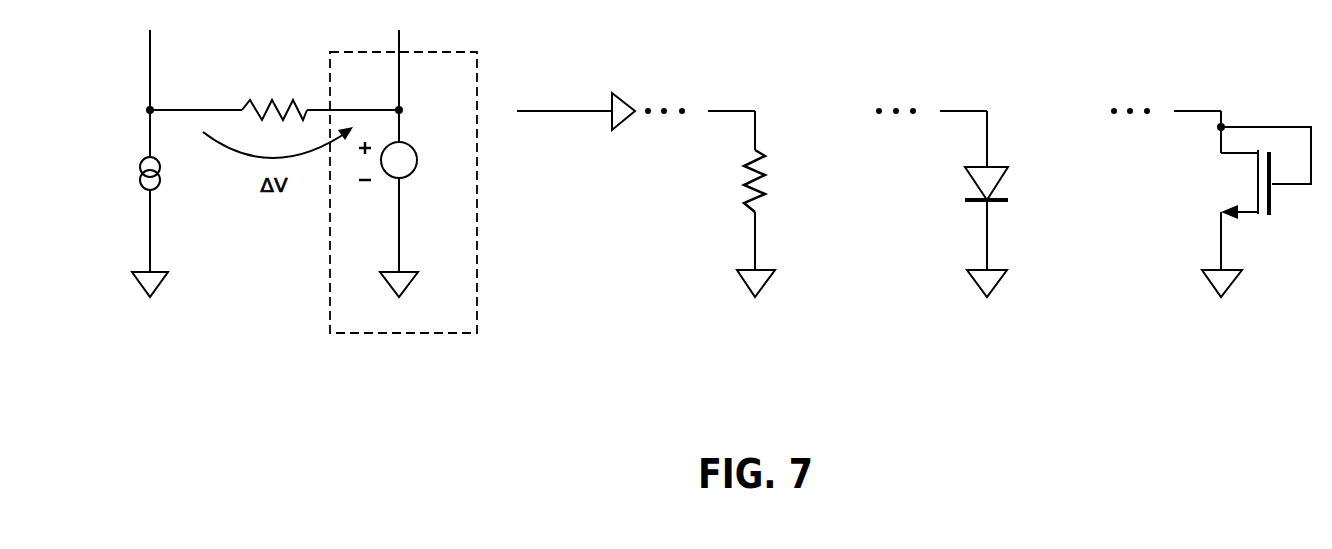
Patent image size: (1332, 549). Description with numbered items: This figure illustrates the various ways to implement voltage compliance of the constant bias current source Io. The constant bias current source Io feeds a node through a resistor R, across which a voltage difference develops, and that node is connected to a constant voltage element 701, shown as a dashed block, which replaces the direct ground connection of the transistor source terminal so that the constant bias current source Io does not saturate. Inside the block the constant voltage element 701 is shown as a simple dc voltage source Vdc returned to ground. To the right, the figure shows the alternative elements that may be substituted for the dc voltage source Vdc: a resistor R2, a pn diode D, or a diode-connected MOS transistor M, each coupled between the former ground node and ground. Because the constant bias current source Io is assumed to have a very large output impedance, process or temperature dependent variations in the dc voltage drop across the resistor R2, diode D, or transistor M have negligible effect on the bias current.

The constant voltage element 701 is at (451, 181).
The resistor R is at (274, 97).
The constant bias current source Io is at (135, 226).
The dc voltage source Vdc is at (406, 174).
The resistor R2 is at (772, 181).
The pn diode D is at (999, 184).
The diode-connected MOS transistor M is at (1265, 191).